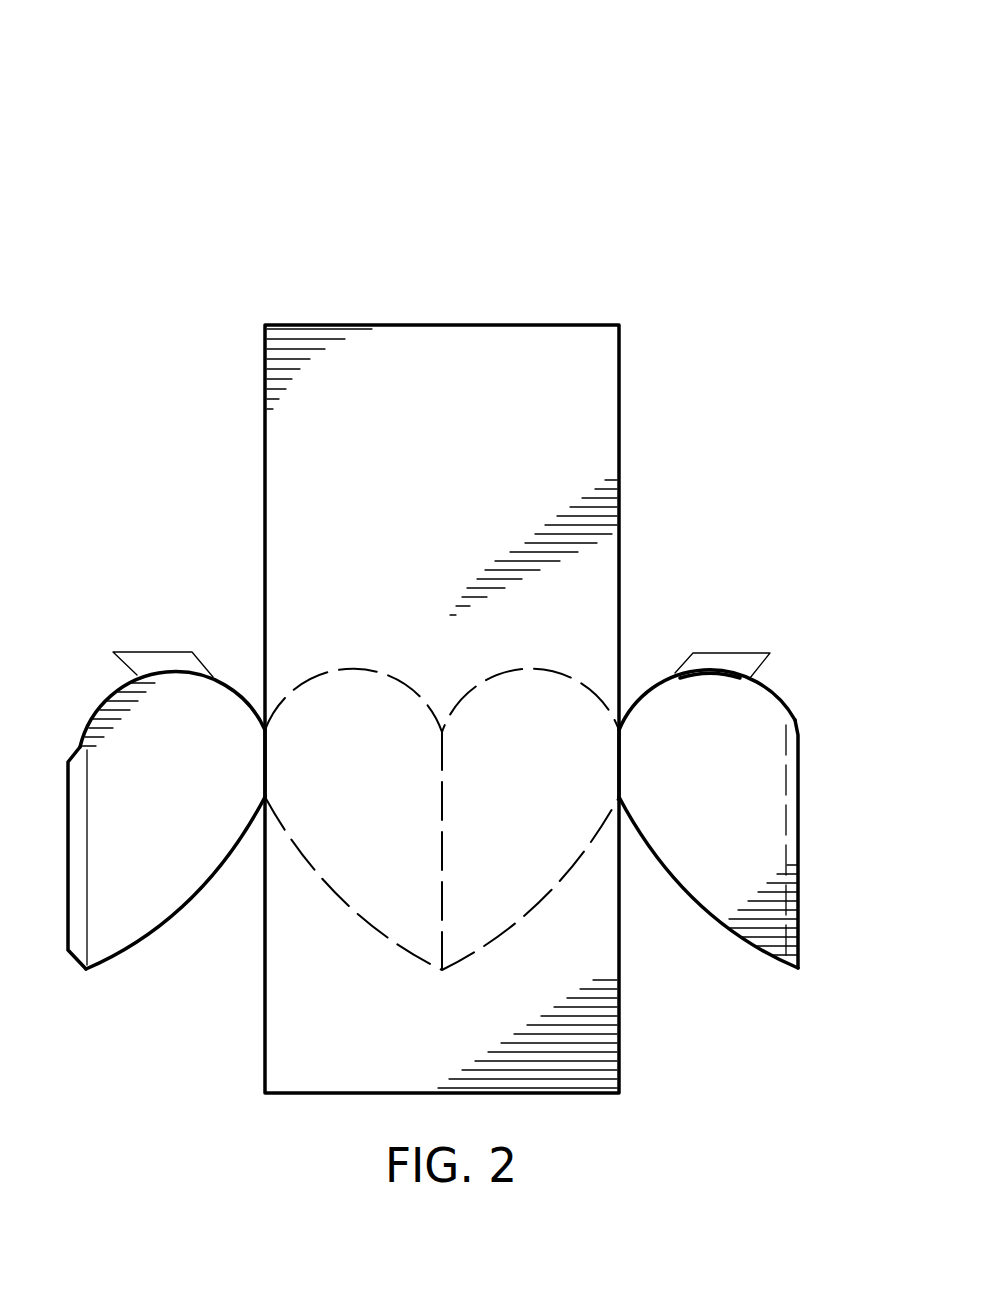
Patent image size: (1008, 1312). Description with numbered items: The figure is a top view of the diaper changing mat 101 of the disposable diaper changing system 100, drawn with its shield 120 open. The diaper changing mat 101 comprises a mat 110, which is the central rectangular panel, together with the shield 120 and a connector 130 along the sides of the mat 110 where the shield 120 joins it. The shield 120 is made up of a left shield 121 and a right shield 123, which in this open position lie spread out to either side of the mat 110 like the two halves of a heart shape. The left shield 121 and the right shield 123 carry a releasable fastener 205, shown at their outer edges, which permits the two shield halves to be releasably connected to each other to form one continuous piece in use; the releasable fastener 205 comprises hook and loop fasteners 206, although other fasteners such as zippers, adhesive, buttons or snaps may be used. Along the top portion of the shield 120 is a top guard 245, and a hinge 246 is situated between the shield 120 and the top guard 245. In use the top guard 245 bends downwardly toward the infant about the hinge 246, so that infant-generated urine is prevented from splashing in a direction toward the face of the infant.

The diaper changing system 100 is at (183, 87).
The diaper changing mat 101 is at (187, 148).
The mat 110 is at (303, 348).
The shield 120 is at (762, 440).
The left shield 121 is at (115, 935).
The right shield 123 is at (732, 912).
The connector 130 is at (265, 785).
The releasable fastener 205 is at (73, 957).
The hook and loop fasteners 206 is at (82, 742).
The top guard 245 is at (707, 653).
The hinge 246 is at (720, 670).